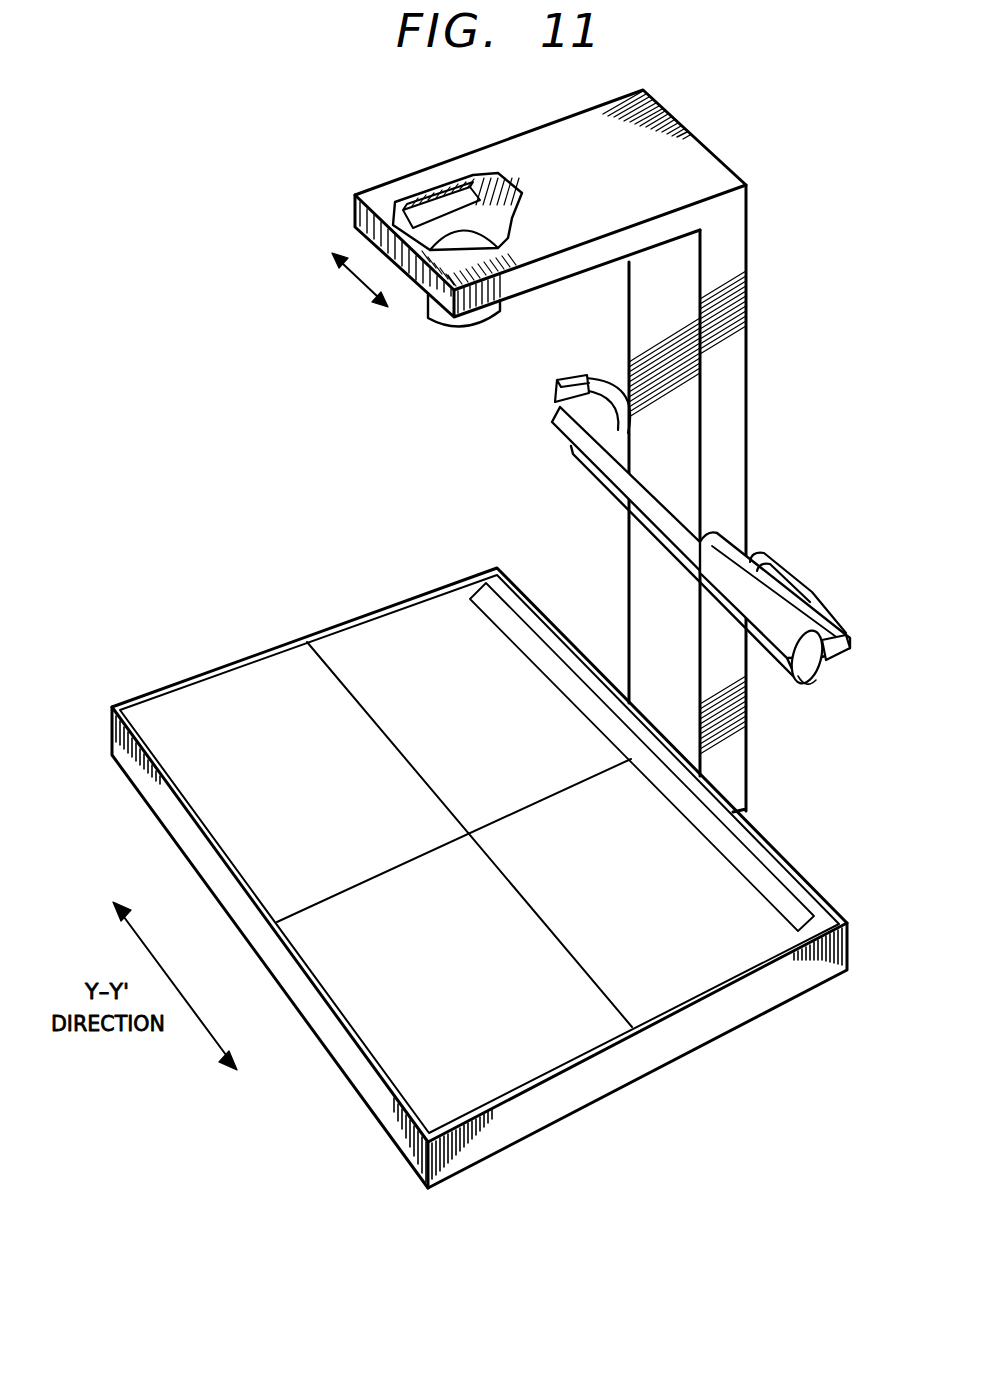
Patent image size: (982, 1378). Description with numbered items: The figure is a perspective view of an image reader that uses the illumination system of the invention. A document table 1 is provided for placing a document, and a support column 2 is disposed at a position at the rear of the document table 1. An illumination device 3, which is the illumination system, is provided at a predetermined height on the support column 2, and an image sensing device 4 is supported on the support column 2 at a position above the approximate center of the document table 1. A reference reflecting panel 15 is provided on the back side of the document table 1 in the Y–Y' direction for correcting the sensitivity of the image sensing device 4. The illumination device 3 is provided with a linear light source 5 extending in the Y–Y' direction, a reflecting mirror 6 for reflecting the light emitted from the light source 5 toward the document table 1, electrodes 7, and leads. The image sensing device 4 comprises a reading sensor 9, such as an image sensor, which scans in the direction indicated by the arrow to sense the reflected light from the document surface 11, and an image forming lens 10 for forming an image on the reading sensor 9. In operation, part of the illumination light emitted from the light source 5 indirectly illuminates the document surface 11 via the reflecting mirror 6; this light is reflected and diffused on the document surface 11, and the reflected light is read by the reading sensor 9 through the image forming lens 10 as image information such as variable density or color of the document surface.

The document table 1 is at (732, 1045).
The support column 2 is at (747, 390).
The illumination device 3 is at (804, 723).
The image sensing device 4 is at (341, 223).
The linear light source 5 is at (796, 678).
The reflecting mirror 6 is at (812, 676).
The electrodes 7 is at (564, 378).
The reading sensor 9 is at (430, 212).
The image forming lens 10 is at (433, 314).
The document surface 11 is at (240, 683).
The reference reflecting panel 15 is at (778, 893).